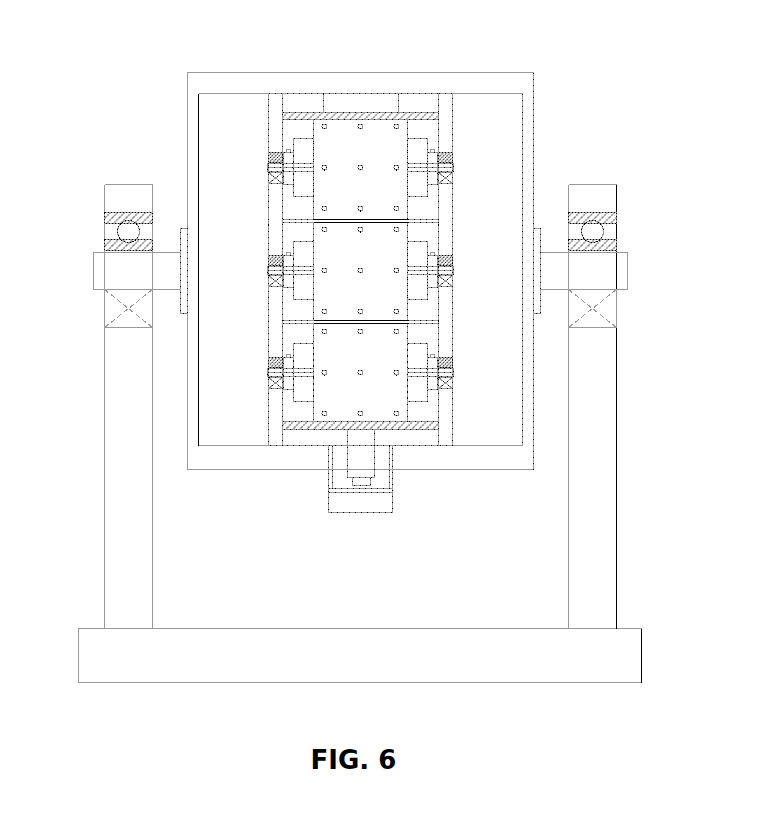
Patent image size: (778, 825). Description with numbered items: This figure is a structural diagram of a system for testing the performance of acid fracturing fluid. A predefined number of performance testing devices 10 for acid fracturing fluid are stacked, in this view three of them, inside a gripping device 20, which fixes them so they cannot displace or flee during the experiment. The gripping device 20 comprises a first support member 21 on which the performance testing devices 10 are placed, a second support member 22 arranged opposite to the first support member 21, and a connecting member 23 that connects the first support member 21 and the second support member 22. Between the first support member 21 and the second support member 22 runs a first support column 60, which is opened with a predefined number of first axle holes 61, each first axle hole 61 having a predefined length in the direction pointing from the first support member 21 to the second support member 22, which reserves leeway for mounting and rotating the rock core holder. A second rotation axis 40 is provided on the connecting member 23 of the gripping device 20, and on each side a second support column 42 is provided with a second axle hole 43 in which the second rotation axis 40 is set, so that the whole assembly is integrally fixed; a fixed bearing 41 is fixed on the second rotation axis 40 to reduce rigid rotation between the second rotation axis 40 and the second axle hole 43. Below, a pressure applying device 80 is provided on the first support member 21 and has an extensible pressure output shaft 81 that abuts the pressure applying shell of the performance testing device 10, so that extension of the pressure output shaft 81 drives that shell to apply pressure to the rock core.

The performance testing device for acid fracturing fluid 10 is at (382, 148).
The gripping device 20 is at (180, 123).
The first support member 21 is at (251, 459).
The second support member 22 is at (297, 86).
The connecting member 23 is at (527, 402).
The second rotation axis 40 is at (117, 271).
The fixed bearing 41 is at (112, 313).
The second support column 42 is at (134, 406).
The second axle hole 43 is at (120, 213).
The first support column 60 is at (275, 329).
The first axle hole 61 is at (446, 189).
The pressure applying device 80 is at (359, 518).
The pressure output shaft 81 is at (360, 450).